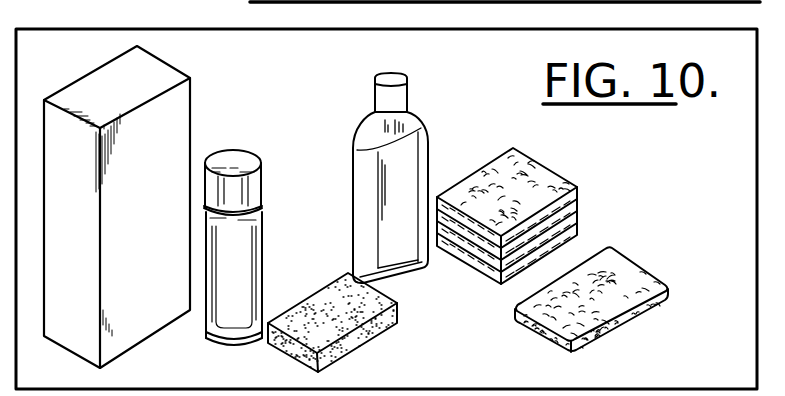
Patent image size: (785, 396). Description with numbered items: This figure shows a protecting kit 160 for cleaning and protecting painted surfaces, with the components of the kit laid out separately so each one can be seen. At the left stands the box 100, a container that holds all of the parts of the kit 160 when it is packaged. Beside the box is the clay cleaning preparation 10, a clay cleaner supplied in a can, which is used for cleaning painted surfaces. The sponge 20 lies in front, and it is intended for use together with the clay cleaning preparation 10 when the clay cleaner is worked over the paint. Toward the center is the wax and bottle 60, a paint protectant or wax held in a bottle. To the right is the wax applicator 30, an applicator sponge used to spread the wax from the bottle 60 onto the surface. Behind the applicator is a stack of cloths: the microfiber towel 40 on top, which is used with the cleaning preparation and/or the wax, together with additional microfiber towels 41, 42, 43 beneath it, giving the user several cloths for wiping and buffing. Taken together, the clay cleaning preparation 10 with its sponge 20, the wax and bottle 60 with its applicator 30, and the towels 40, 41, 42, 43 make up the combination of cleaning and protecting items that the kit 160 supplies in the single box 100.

The protecting kit 160 is at (318, 98).
The box 100 is at (180, 125).
The clay cleaning preparation 10 is at (255, 235).
The wax and bottle 60 is at (428, 130).
The sponge 20 is at (385, 330).
The microfiber towel 40 is at (556, 178).
The additional microfiber towel 41 is at (577, 207).
The additional microfiber towel 42 is at (578, 231).
The additional microfiber towel 43 is at (496, 279).
The wax applicator 30 is at (635, 278).